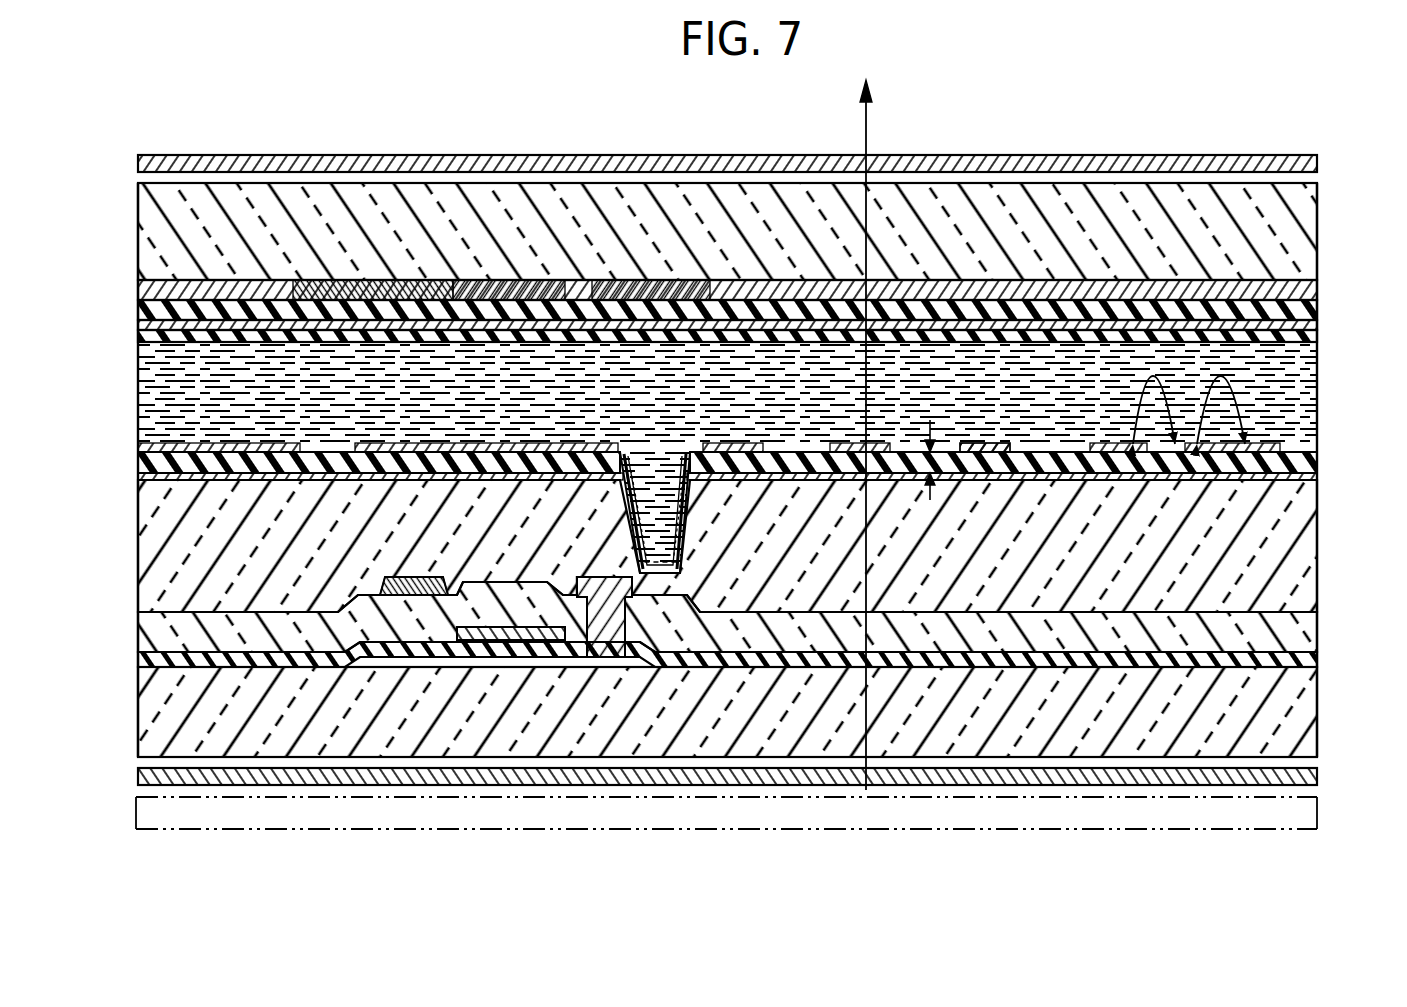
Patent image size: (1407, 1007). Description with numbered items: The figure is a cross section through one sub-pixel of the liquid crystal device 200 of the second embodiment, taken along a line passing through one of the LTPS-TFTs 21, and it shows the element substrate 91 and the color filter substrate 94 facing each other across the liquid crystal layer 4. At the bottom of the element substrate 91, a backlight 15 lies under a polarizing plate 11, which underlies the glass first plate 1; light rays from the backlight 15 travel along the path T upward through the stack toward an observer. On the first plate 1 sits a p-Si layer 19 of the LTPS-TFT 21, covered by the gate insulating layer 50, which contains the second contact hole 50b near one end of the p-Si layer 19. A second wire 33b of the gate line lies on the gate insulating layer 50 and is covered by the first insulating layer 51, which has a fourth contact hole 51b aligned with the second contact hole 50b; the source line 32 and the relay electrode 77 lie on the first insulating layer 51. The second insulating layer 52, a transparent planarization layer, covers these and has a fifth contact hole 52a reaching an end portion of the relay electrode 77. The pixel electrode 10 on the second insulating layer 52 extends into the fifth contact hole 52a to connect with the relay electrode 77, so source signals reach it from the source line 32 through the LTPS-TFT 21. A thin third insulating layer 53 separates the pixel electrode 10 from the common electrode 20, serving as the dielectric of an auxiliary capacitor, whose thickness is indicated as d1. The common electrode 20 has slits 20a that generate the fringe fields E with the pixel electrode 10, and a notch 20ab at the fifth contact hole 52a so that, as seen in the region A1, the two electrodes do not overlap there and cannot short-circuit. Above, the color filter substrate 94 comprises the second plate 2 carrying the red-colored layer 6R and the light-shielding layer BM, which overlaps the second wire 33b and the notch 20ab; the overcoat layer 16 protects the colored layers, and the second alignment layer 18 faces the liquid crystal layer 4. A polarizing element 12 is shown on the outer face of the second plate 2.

The liquid crystal device 200 is at (735, 112).
The upper polarizing plate 12 is at (1317, 163).
The second plate 2 is at (1317, 226).
The red-colored layer 6R is at (200, 280).
The light-shielding layer BM is at (620, 280).
The overcoat layer 16 is at (1317, 304).
The second alignment layer 18 is at (1317, 337).
The color filter substrate 94 is at (130, 340).
The liquid crystal layer 4 is at (1317, 385).
The common electrode 20 is at (840, 445).
The slit 20a is at (1025, 440).
The notch 20ab is at (625, 446).
The pixel electrode 10 is at (190, 471).
The third insulating layer 53 is at (1317, 455).
The second insulating layer 52 is at (1317, 547).
The fifth contact hole 52a is at (662, 465).
The region A1 is at (620, 500).
The first insulating layer 51 is at (1317, 629).
The source line 32 is at (412, 577).
The second wire 33b is at (505, 627).
The relay electrode 77 is at (600, 578).
The gate insulating layer 50 is at (1317, 662).
The second contact hole 50b is at (600, 660).
The fourth contact hole 51b is at (625, 660).
The p-Si layer 19 is at (510, 660).
The first plate 1 is at (1317, 712).
The polarizing plate 11 is at (1317, 772).
The backlight 15 is at (1317, 815).
The element substrate 91 is at (128, 440).
The LTPS-TFT 21 is at (460, 548).
The path T is at (868, 122).
The thickness of common electrode d1 is at (912, 452).
The fringe field E is at (1187, 384).